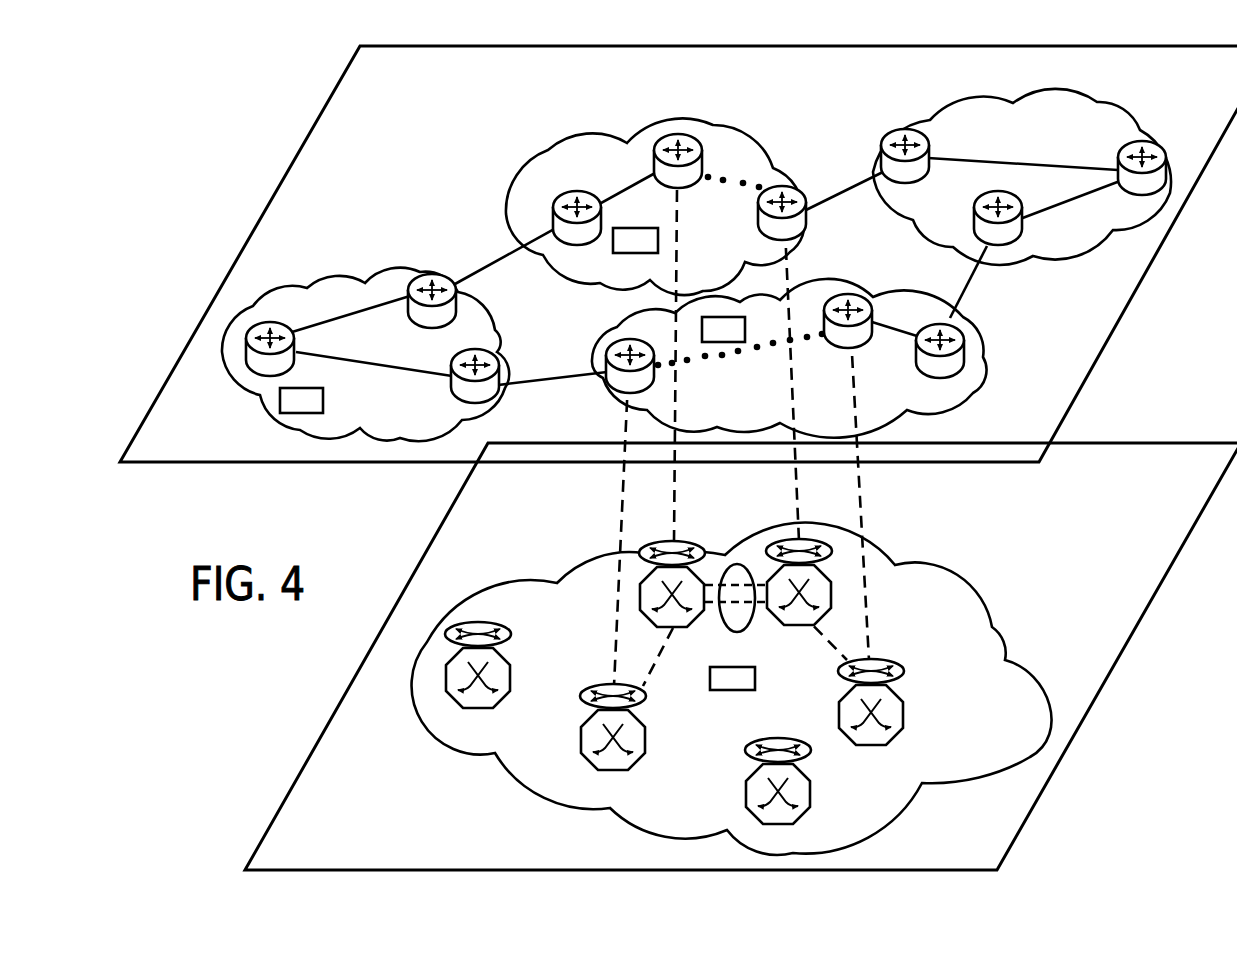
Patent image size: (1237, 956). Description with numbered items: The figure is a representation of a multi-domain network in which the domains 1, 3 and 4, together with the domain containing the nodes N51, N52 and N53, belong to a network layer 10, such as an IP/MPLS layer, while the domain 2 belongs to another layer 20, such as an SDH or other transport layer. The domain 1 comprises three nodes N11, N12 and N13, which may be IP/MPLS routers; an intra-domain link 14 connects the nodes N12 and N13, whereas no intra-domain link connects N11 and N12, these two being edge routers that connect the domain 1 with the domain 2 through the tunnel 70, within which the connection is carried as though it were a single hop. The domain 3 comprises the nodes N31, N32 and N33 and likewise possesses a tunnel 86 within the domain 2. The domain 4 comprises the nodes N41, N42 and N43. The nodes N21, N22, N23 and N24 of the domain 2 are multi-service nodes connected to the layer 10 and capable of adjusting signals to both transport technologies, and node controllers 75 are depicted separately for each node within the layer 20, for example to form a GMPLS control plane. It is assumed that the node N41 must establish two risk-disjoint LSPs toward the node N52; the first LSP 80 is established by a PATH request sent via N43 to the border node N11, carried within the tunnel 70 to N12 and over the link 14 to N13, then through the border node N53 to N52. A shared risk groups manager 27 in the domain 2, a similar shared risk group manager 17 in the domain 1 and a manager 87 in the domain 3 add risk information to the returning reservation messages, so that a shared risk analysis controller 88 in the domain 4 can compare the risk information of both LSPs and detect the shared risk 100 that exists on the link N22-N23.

The network layer 10 is at (320, 100).
The transport layer 20 is at (312, 740).
The domain 1 is at (984, 372).
The domain 2 is at (977, 584).
The domain 3 is at (719, 113).
The domain 4 is at (303, 276).
The intra-domain link 14 is at (896, 336).
The shared risk group manager 17 is at (716, 317).
The shared risk groups manager 27 is at (710, 682).
The LSP (tunnel) 70 is at (724, 366).
The node controllers 75 is at (466, 625).
The LSP 80 is at (400, 378).
The tunnel 86 is at (748, 182).
The shared risk group manager 87 is at (603, 250).
The shared risk analysis controller 88 is at (292, 413).
The shared risk 100 is at (737, 564).
The node N11 is at (618, 340).
The node N12 is at (846, 292).
The node N13 is at (963, 332).
The node N31 is at (570, 190).
The node N32 is at (660, 136).
The node N33 is at (790, 186).
The node N41 is at (248, 360).
The node N42 is at (432, 275).
The node N43 is at (470, 392).
The node N51 is at (893, 131).
The node N52 is at (1150, 141).
The node N53 is at (1000, 191).
The multi-service node N21 is at (580, 735).
The multi-service node N22 is at (640, 597).
The multi-service node N23 is at (832, 592).
The multi-service node N24 is at (905, 712).